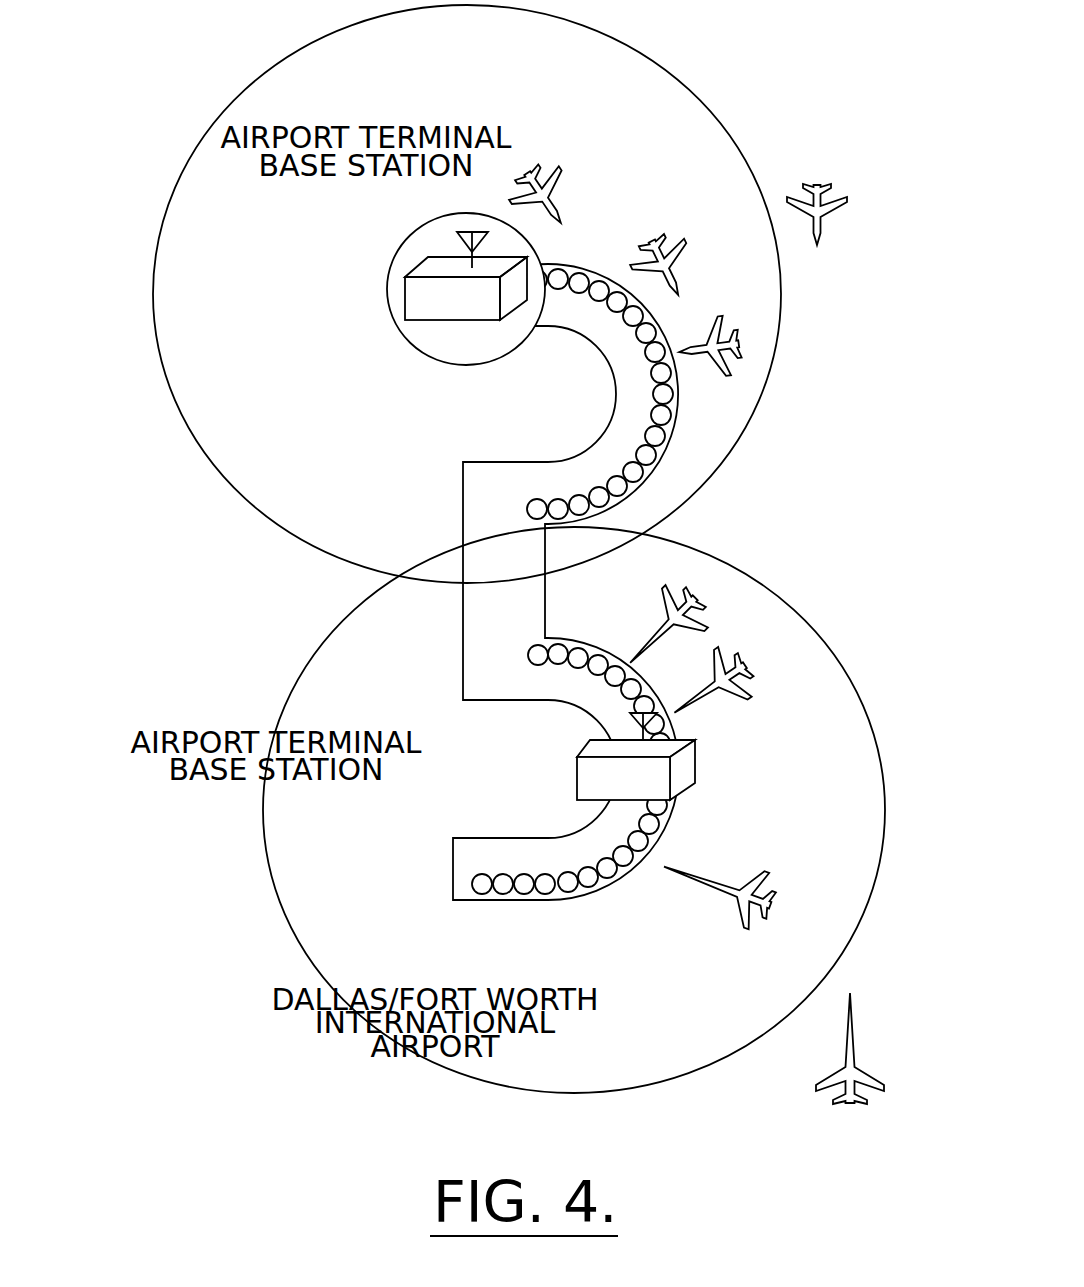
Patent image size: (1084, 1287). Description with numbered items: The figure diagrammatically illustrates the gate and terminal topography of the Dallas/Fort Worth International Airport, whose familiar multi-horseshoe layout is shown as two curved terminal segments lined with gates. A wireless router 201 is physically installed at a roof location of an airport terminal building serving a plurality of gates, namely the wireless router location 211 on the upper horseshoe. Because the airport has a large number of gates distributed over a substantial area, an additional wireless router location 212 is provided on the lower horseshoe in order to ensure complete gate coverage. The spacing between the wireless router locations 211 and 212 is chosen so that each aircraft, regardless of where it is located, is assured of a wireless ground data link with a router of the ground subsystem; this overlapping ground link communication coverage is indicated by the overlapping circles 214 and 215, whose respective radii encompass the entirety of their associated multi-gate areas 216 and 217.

The wireless router 201 is at (482, 313).
The wireless router location 211 is at (454, 308).
The additional wireless router location 212 is at (683, 767).
The coverage circle 214 is at (421, 294).
The coverage circle 215 is at (598, 810).
The multi-gate area 216 is at (691, 394).
The multi-gate area 217 is at (611, 769).